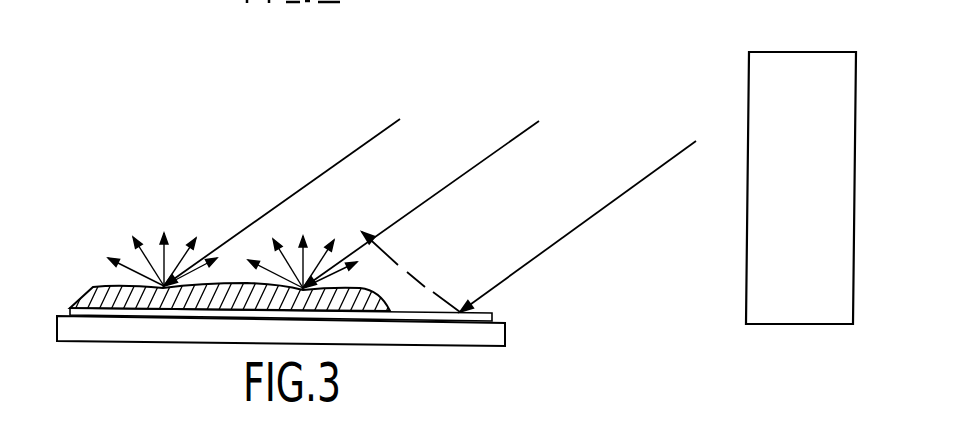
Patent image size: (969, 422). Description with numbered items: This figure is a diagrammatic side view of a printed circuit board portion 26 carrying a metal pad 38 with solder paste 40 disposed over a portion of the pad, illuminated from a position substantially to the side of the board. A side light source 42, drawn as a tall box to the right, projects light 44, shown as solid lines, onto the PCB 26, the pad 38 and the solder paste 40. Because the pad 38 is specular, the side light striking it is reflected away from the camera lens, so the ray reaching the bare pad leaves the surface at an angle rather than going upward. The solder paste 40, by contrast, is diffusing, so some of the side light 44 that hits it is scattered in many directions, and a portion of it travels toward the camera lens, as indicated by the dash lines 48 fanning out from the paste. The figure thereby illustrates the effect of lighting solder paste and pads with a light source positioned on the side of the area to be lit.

The printed circuit board portion 26 is at (540, 334).
The metal pad 38 is at (493, 318).
The solder paste 40 is at (80, 288).
The side light source 42 is at (802, 51).
The light 44 is at (380, 132).
The dash lines 48 is at (167, 230).